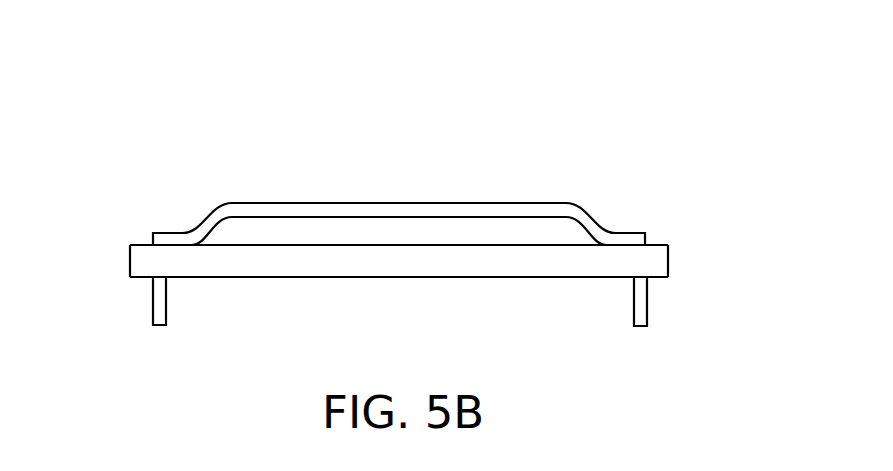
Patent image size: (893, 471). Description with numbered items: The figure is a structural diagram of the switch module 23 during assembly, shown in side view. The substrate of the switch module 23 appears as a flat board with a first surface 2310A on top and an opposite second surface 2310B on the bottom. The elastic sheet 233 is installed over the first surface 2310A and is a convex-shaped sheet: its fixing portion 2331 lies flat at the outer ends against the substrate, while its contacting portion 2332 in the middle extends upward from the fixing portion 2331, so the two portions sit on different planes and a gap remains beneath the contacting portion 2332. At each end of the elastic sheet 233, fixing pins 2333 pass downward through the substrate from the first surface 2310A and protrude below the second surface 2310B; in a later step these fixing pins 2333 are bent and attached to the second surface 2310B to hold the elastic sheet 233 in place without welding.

The switch module 23 is at (400, 104).
The elastic sheet 233 is at (497, 202).
The fixing portion 2331 is at (173, 241).
The contacting portion 2332 is at (333, 214).
The first surface 2310A is at (697, 210).
The second surface 2310B is at (407, 278).
The fixing pins 2333 is at (158, 303).